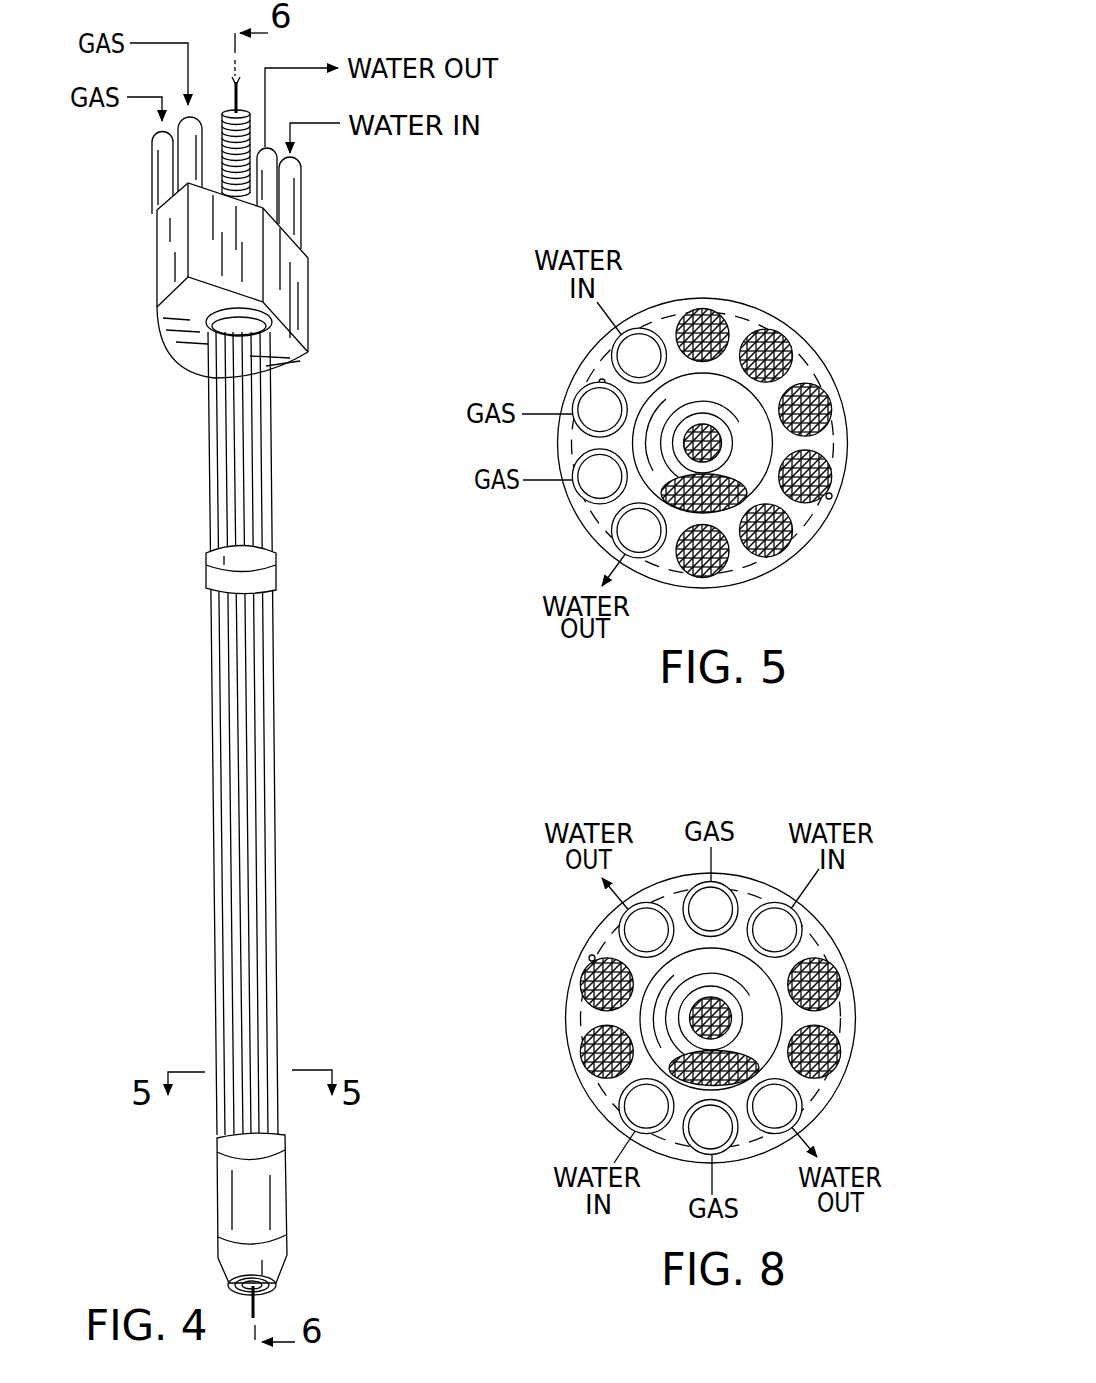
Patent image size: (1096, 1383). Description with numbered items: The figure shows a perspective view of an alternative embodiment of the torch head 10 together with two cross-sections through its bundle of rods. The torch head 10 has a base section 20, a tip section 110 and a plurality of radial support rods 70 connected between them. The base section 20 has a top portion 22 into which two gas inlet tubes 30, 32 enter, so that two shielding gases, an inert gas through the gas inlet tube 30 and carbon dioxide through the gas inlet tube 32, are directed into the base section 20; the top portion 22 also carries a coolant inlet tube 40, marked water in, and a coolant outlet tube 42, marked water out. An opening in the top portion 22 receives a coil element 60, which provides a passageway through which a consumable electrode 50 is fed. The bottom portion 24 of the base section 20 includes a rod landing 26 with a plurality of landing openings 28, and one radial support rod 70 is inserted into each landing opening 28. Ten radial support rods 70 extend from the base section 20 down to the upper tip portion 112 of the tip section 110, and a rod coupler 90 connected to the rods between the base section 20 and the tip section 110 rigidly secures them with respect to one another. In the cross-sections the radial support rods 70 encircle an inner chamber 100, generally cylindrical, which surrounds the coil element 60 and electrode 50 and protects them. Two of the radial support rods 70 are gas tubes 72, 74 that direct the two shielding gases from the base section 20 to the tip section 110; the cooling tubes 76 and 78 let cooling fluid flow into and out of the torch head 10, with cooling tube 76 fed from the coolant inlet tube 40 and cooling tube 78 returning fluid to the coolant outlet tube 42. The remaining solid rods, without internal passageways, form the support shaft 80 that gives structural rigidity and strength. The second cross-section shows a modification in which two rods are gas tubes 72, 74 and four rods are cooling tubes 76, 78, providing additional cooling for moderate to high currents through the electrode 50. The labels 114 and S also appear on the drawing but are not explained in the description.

In FIG. 4, the torch head 10 is at (132, 668).
In FIG. 4, the base section 20 is at (150, 279).
In FIG. 4, the top portion 22 is at (300, 233).
In FIG. 4, the bottom portion 24 is at (175, 343).
In FIG. 4, the rod landing 26 is at (260, 315).
In FIG. 4, the landing openings 28 is at (250, 328).
In FIG. 4, the gas inlet tube 30 is at (158, 187).
In FIG. 4, the gas inlet tube 32 is at (188, 155).
In FIG. 4, the coolant inlet tube 40 is at (295, 203).
In FIG. 4, the coolant outlet tube 42 is at (270, 187).
In FIG. 4, the electrode 50 is at (232, 100).
In FIG. 5, the electrode 50 is at (703, 443).
In FIG. 8, the electrode 50 is at (723, 1013).
In FIG. 4, the coil element 60 is at (243, 133).
In FIG. 5, the coil element 60 is at (751, 430).
In FIG. 8, the coil element 60 is at (755, 1044).
In FIG. 4, the radial support rods 70 is at (280, 648).
In FIG. 5, the gas tube 72 is at (579, 392).
In FIG. 8, the gas tube 72 is at (725, 902).
In FIG. 5, the gas tube 74 is at (582, 494).
In FIG. 8, the gas tube 74 is at (727, 1150).
In FIG. 5, the cooling tube 76 is at (654, 333).
In FIG. 8, the cooling tube 76 is at (794, 923).
In FIG. 5, the cooling tube 78 is at (632, 542).
In FIG. 8, the cooling tube 78 is at (657, 906).
In FIG. 5, the support shaft 80 is at (769, 344).
In FIG. 8, the support shaft 80 is at (835, 1038).
In FIG. 4, the rod coupler 90 is at (272, 564).
In FIG. 5, the inner chamber 100 is at (821, 384).
In FIG. 8, the inner chamber 100 is at (647, 1056).
In FIG. 4, the tip section 110 is at (292, 1190).
In FIG. 5, the tip section 110 is at (812, 550).
In FIG. 8, the tip section 110 is at (840, 935).
In FIG. 4, the upper tip portion 112 is at (215, 1152).
In FIG. 5, the upper tip portion 112 is at (817, 353).
In FIG. 8, the upper tip portion 112 is at (585, 945).
In FIG. 4, the nozzle band 114 is at (287, 1240).
In FIG. 5, the spacer S is at (599, 379).
In FIG. 8, the spacer S is at (589, 958).